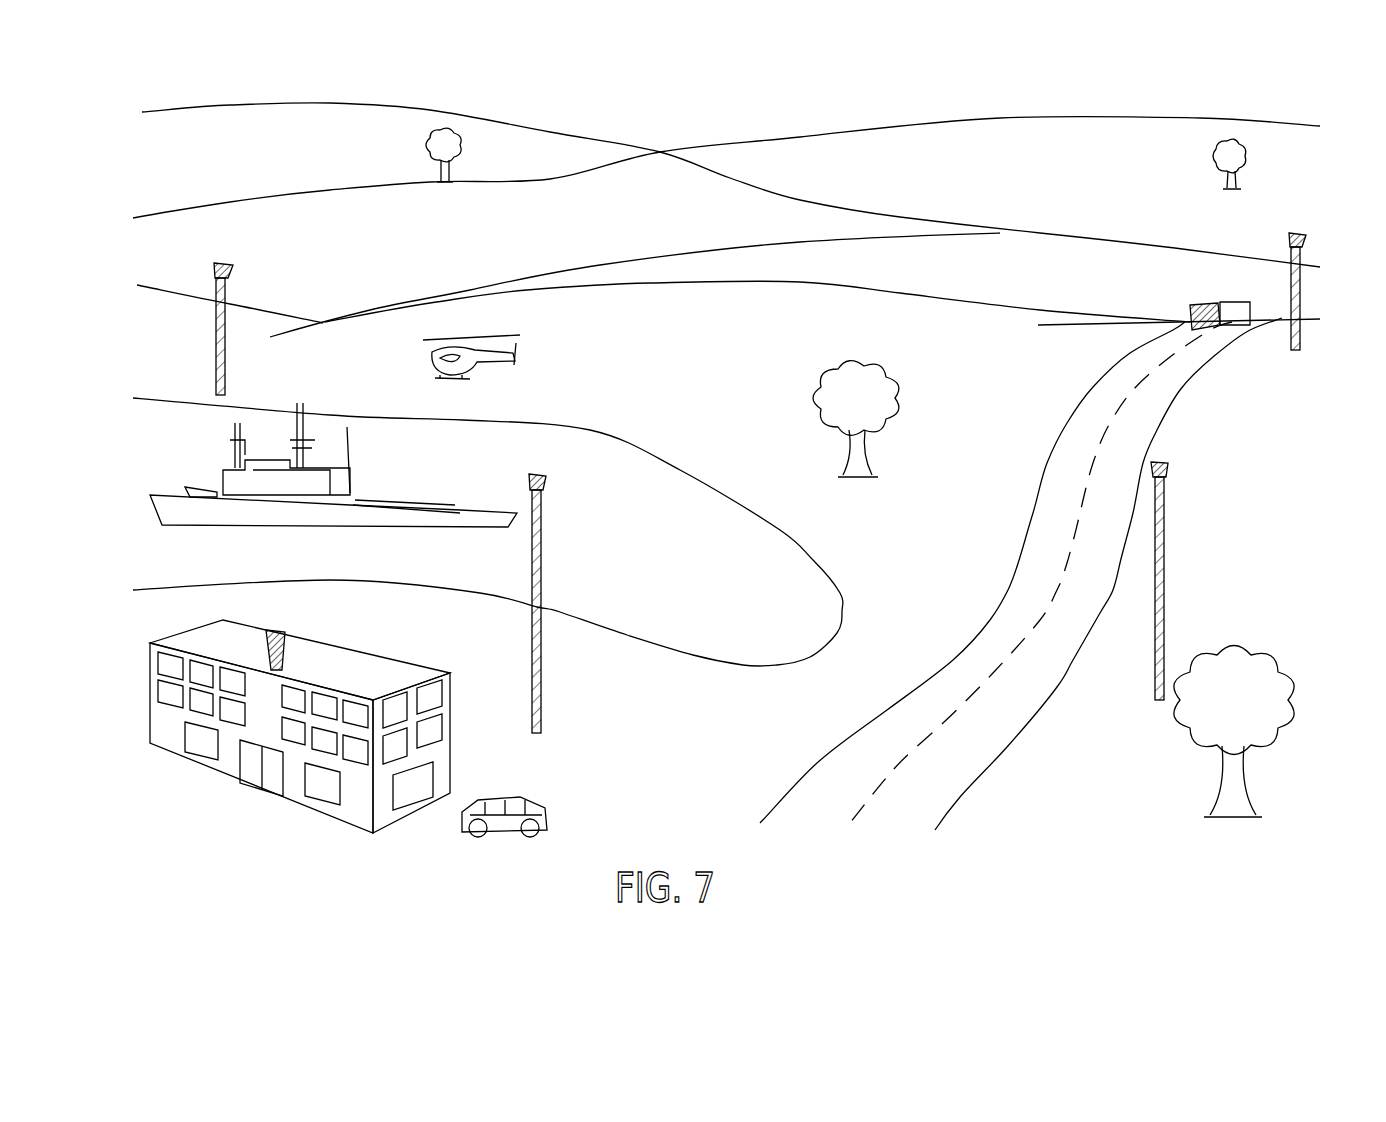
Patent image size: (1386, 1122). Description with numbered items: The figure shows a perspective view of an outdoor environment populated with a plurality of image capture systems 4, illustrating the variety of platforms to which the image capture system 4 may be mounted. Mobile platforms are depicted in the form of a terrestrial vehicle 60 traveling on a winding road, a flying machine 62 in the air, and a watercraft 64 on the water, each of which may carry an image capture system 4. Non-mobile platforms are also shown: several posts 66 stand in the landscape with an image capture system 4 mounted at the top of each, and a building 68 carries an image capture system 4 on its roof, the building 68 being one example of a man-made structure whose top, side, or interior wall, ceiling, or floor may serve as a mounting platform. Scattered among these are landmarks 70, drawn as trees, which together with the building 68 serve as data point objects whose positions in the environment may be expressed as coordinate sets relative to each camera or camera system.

The image capture system 4 is at (242, 265).
The terrestrial vehicle 60 is at (1205, 300).
The flying machine 62 is at (497, 363).
The watercraft 64 is at (192, 515).
The post 66 is at (215, 360).
The building 68 is at (380, 692).
The landmark 70 is at (416, 148).